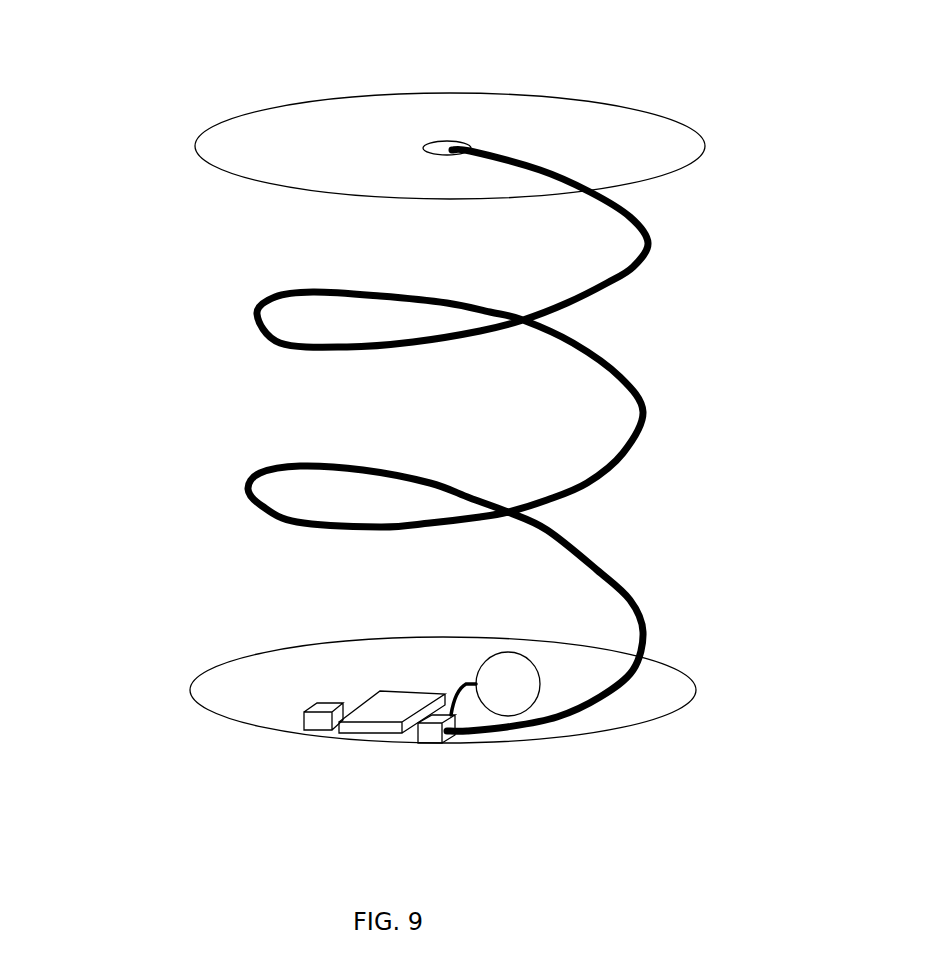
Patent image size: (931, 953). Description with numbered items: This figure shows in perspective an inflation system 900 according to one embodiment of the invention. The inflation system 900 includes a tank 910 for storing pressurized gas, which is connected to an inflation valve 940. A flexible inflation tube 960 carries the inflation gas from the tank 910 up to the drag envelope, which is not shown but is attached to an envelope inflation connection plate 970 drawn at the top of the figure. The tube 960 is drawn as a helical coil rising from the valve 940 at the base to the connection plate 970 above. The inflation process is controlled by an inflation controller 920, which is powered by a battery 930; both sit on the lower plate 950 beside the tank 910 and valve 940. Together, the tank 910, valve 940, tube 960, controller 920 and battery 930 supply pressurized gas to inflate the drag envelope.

The inflation system 900 is at (140, 92).
The tank 910 is at (490, 663).
The inflation controller 920 is at (362, 692).
The battery 930 is at (302, 722).
The inflation valve 940 is at (432, 742).
The base plate 950 is at (652, 675).
The flexible inflation tube 960 is at (617, 278).
The envelope inflation connection plate 970 is at (650, 183).